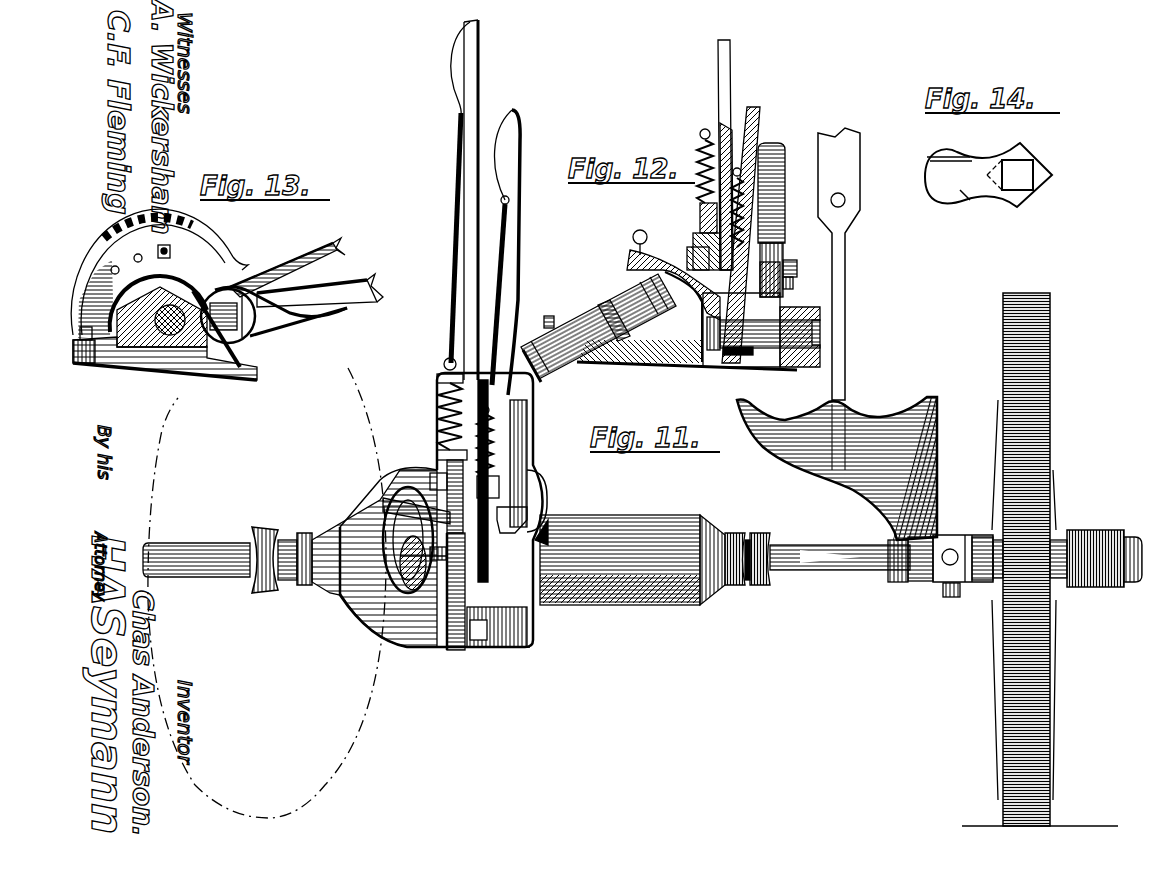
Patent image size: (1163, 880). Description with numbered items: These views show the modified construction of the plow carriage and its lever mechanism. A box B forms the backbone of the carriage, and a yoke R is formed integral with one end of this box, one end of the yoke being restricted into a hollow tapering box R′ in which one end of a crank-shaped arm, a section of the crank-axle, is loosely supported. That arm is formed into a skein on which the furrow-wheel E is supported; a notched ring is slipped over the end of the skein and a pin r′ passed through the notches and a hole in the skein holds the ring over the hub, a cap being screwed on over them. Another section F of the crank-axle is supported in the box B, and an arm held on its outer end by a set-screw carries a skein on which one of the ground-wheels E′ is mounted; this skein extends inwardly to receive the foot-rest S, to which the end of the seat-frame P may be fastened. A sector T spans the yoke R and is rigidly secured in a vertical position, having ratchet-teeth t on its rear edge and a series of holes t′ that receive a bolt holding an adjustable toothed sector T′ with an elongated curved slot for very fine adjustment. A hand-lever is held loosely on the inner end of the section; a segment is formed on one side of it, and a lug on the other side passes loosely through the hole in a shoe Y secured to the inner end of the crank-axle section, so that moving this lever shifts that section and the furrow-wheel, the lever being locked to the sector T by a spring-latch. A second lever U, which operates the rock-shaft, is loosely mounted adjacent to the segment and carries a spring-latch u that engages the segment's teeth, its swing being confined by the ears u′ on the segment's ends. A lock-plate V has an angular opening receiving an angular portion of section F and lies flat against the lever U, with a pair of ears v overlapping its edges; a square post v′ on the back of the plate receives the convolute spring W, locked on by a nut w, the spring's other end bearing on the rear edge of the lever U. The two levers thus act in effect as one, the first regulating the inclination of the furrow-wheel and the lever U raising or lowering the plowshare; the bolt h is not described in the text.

In FIG. 13, the sector T is at (165, 315).
In FIG. 12, the sector T is at (713, 235).
In FIG. 11, the sector T is at (408, 568).
In FIG. 13, the adjustable toothed sector T' is at (158, 264).
In FIG. 12, the adjustable toothed sector T' is at (696, 249).
In FIG. 13, the ratchet-teeth t is at (241, 256).
In FIG. 11, the ratchet-teeth t is at (436, 485).
In FIG. 13, the holes t' is at (152, 273).
In FIG. 11, the holes t' is at (423, 564).
In FIG. 12, the second lever U is at (771, 178).
In FIG. 11, the second lever U is at (514, 294).
In FIG. 11, the spring-latch u is at (513, 466).
In FIG. 11, the ears u' is at (551, 516).
In FIG. 13, the lock-plate V is at (324, 289).
In FIG. 14, the lock-plate V is at (983, 200).
In FIG. 14, the ears v is at (992, 153).
In FIG. 12, the square post v' is at (799, 265).
In FIG. 13, the convolute spring W is at (320, 318).
In FIG. 12, the convolute spring W is at (785, 228).
In FIG. 12, the nut w is at (799, 279).
In FIG. 12, the shoe Y is at (630, 238).
In FIG. 11, the shoe Y is at (405, 500).
In FIG. 12, the yoke R is at (659, 331).
In FIG. 11, the yoke R is at (427, 510).
In FIG. 12, the hollow tapering box R' is at (605, 342).
In FIG. 11, the hollow tapering box R' is at (307, 571).
In FIG. 13, the pin r' is at (238, 319).
In FIG. 12, the box B is at (800, 327).
In FIG. 11, the box B is at (660, 515).
In FIG. 12, the section of the crank-axle F is at (780, 370).
In FIG. 11, the section of the crank-axle F is at (823, 572).
In FIG. 11, the foot-rest S is at (855, 470).
In FIG. 12, the seat-frame P is at (847, 292).
In FIG. 12, the bolt h is at (763, 336).
In FIG. 11, the furrow-wheel E is at (267, 593).
In FIG. 11, the ground-wheel E' is at (1040, 559).